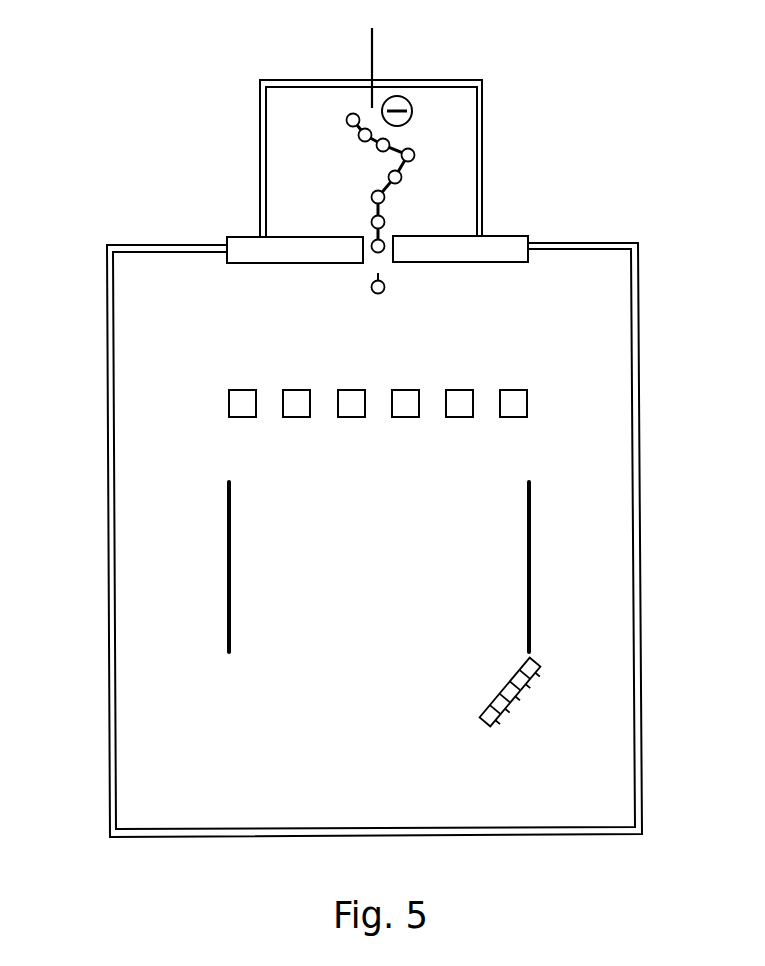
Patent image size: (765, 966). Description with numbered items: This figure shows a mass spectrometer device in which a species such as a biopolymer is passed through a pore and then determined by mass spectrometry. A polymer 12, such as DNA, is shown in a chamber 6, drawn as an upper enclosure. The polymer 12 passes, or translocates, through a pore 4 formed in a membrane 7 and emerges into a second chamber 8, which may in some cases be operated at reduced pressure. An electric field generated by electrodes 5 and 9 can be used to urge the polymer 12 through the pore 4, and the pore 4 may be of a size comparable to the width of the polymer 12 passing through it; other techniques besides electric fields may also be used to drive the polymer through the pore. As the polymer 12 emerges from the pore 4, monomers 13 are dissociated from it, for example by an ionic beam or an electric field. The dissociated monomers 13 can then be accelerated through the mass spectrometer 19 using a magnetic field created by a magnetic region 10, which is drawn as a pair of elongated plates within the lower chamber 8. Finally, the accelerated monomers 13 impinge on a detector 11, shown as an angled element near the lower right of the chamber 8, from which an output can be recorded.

The pore 4 is at (363, 232).
The electrode 5 is at (388, 47).
The chamber 6 is at (458, 141).
The membrane 7 is at (503, 240).
The chamber 8 is at (600, 317).
The electrode 9 is at (572, 400).
The magnetic region 10 is at (566, 568).
The detector 11 is at (538, 712).
The polymer 12 is at (330, 129).
The monomers 13 is at (356, 294).
The mass spectrometer 19 is at (108, 596).